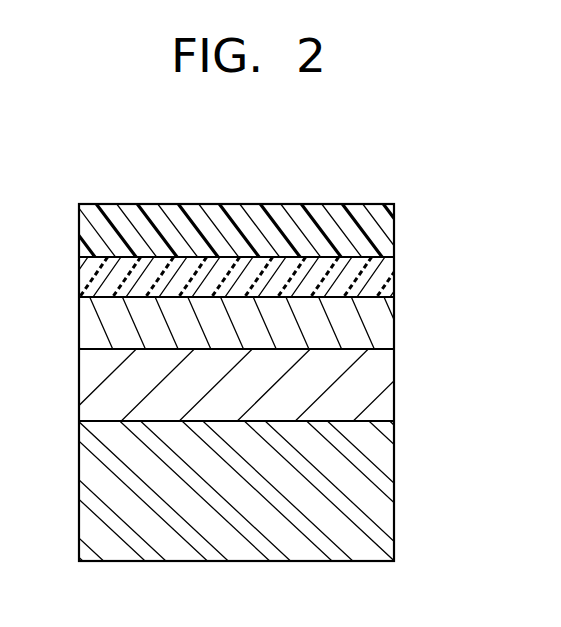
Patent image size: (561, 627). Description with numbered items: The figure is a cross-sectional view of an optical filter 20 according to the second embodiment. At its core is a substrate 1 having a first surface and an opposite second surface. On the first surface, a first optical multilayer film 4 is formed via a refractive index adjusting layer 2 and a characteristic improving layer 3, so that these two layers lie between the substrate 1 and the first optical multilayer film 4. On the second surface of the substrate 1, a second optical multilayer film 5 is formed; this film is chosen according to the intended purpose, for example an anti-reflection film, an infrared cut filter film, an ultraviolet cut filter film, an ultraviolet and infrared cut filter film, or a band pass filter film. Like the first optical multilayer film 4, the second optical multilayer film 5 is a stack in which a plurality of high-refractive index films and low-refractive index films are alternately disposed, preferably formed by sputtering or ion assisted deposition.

The optical filter 20 is at (408, 175).
The first optical multilayer film 4 is at (370, 224).
The characteristic improving layer 3 is at (370, 278).
The refractive index adjusting layer 2 is at (370, 322).
The substrate 1 is at (368, 392).
The second optical multilayer film 5 is at (368, 488).